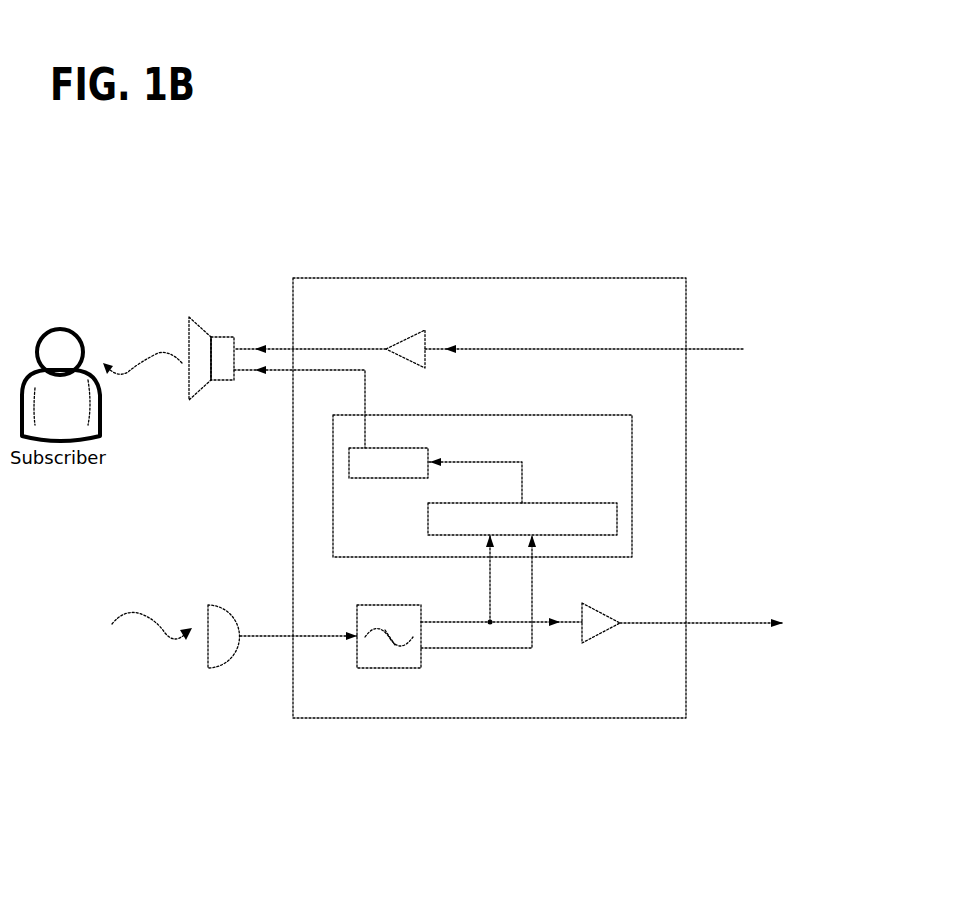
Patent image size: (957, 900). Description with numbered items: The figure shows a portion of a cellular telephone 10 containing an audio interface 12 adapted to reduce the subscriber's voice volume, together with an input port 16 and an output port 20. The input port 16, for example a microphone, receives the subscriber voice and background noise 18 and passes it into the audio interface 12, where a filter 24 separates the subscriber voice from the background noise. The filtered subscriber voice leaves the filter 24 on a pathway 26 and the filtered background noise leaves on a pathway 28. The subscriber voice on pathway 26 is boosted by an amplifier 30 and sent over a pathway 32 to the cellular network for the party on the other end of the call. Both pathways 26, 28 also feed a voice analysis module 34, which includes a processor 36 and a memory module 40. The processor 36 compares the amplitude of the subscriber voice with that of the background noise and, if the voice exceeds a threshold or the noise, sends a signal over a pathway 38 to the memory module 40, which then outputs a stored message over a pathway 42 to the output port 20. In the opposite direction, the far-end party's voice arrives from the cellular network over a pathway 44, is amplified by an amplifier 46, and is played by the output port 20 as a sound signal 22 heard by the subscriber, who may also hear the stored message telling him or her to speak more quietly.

The cellular telephone 10 is at (211, 883).
The audio interface 12 is at (445, 718).
The input port 16 is at (227, 608).
The subscriber voice and background noise 18 is at (128, 598).
The output port 20 is at (188, 333).
The sound signal 22 is at (136, 343).
The filter 24 is at (370, 605).
The pathway 26 is at (455, 622).
The pathway 28 is at (483, 648).
The amplifier 30 is at (605, 613).
The pathway 32 is at (720, 622).
The voice analysis module 34 is at (520, 417).
The processor 36 is at (428, 520).
The pathway 38 is at (520, 482).
The memory module 40 is at (348, 468).
The pathway 42 is at (368, 397).
The pathway 44 is at (715, 349).
The amplifier 46 is at (403, 340).